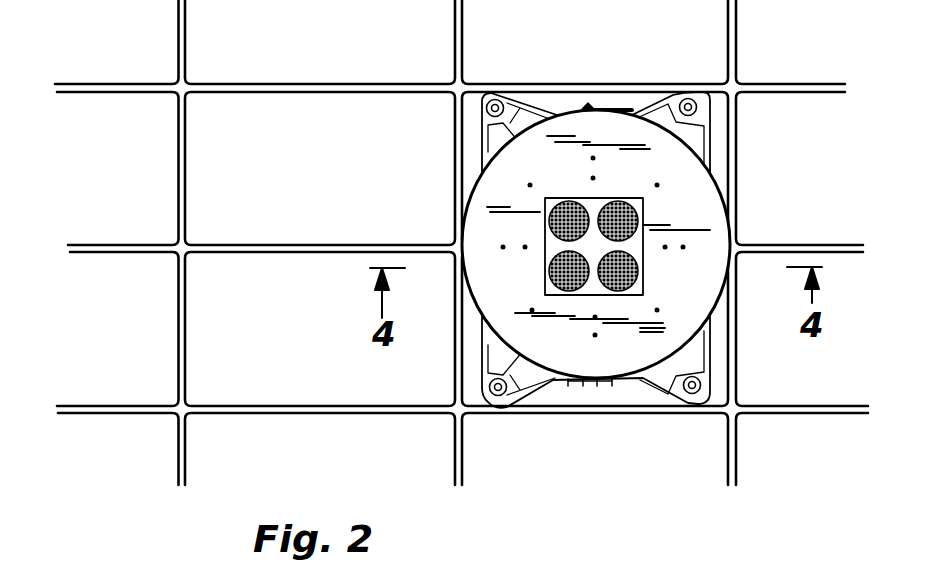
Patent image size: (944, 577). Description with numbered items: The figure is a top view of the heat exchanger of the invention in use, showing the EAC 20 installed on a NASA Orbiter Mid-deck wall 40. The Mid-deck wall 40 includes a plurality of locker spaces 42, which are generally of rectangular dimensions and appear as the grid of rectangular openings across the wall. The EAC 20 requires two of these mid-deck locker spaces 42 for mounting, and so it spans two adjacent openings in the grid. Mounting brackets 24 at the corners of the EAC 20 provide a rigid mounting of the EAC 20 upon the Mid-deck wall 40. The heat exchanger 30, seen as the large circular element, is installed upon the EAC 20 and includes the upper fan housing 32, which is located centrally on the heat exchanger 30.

The EAC 20 is at (708, 168).
The mounting brackets 24 is at (490, 92).
The heat exchanger 30 is at (714, 308).
The upper fan housing 32 is at (645, 213).
The Mid-deck wall 40 is at (178, 152).
The locker spaces 42 is at (262, 138).